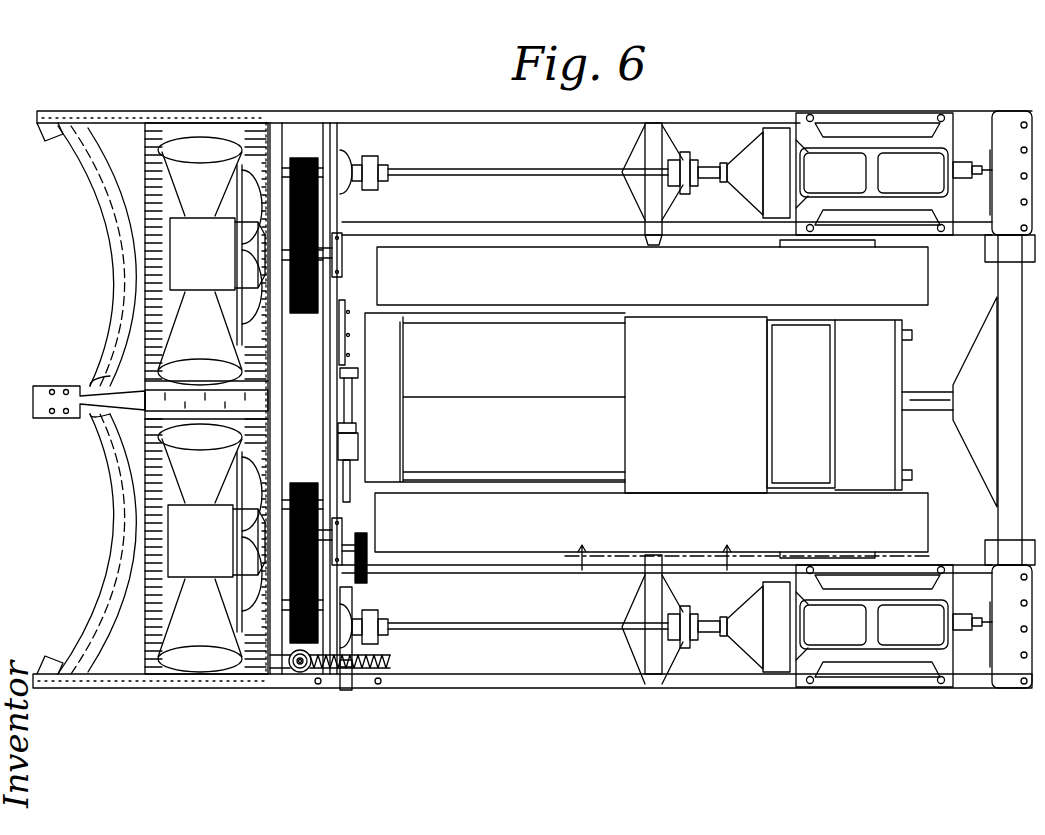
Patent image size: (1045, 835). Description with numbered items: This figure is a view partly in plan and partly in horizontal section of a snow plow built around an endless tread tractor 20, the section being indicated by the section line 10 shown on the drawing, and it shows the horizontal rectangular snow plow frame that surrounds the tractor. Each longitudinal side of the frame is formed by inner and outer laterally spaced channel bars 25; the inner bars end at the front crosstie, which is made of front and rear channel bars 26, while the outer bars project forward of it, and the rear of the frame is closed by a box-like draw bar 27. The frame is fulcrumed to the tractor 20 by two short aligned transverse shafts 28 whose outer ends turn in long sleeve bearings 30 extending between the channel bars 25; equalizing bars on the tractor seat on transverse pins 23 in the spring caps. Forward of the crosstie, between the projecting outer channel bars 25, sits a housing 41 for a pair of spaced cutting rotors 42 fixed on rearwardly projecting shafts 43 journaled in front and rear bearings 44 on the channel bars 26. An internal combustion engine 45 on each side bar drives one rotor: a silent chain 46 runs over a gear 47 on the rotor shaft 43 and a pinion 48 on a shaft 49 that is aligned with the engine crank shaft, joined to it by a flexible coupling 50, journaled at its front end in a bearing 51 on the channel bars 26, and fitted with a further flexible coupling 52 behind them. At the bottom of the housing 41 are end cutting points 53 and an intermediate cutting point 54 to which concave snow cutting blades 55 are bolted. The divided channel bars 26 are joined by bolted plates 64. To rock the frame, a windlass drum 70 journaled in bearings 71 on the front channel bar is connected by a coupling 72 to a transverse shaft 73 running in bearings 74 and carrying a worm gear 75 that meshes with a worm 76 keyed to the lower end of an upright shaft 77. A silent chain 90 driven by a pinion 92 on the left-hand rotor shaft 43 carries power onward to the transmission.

The section line 10 is at (733, 557).
The endless tread tractor 20 is at (638, 403).
The transverse pins 23 is at (276, 402).
The channel bars 25 is at (488, 222).
The channel bars 26 is at (333, 344).
The rear draw bar 27 is at (1000, 477).
The transverse shafts 28 is at (658, 246).
The sleeve bearings 30 is at (645, 195).
The housing 41 is at (121, 688).
The rotors 42 is at (210, 404).
The shafts 43 is at (343, 250).
The bearings 44 is at (268, 533).
The internal combustion engine 45 is at (894, 400).
The silent chains 46 is at (302, 158).
The gears 47 is at (316, 230).
The pinions 48 is at (312, 157).
The shafts 49 is at (452, 168).
The flexible couplings 50 is at (686, 188).
The bearings 51 is at (350, 162).
The flexible couplings 52 is at (376, 165).
The end cutting points 53 is at (44, 131).
The intermediate cutting point 54 is at (33, 400).
The snow cutting blades 55 is at (117, 238).
The plates 64 is at (347, 326).
The windlass drum 70 is at (352, 394).
The bearings 71 is at (358, 372).
The coupling 72 is at (358, 448).
The transverse shaft 73 is at (350, 472).
The bearings 74 is at (346, 690).
The worm gear 75 is at (388, 660).
The worm 76 is at (302, 670).
The upright shaft 77 is at (295, 669).
The silent chain 90 is at (372, 548).
The pinion 92 is at (368, 535).